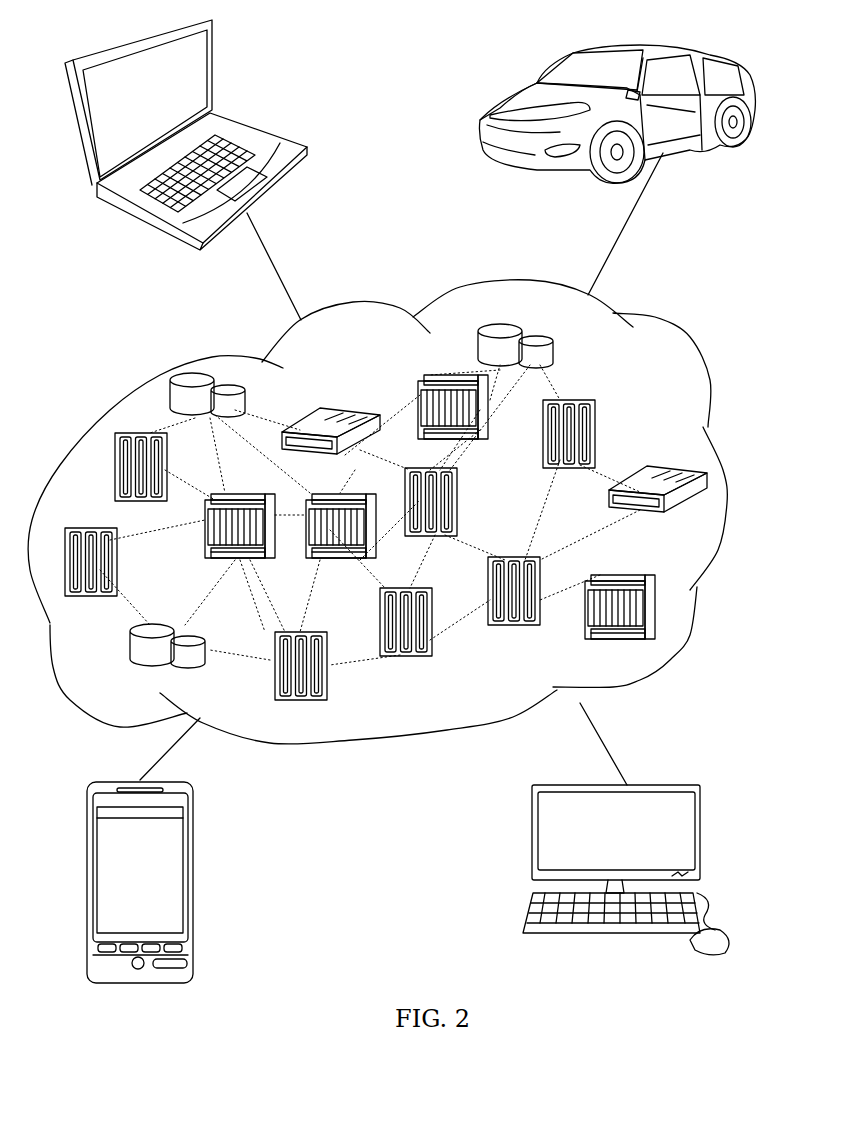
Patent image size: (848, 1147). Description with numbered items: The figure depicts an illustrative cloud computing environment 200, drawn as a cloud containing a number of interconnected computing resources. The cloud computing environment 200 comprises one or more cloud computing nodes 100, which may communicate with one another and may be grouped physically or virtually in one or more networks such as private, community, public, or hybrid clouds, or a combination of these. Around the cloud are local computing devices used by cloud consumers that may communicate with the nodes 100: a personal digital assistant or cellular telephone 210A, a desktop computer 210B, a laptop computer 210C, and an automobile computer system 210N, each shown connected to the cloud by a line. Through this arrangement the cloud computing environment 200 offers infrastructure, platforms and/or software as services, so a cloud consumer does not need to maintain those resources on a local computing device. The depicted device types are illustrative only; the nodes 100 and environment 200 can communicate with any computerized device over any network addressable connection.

The cloud computing node 100 is at (680, 455).
The cloud computing environment 200 is at (688, 335).
The personal digital assistant (PDA) or cellular telephone 210A is at (223, 787).
The desktop computer 210B is at (737, 783).
The laptop computer 210C is at (303, 117).
The automobile computer system 210N is at (713, 60).